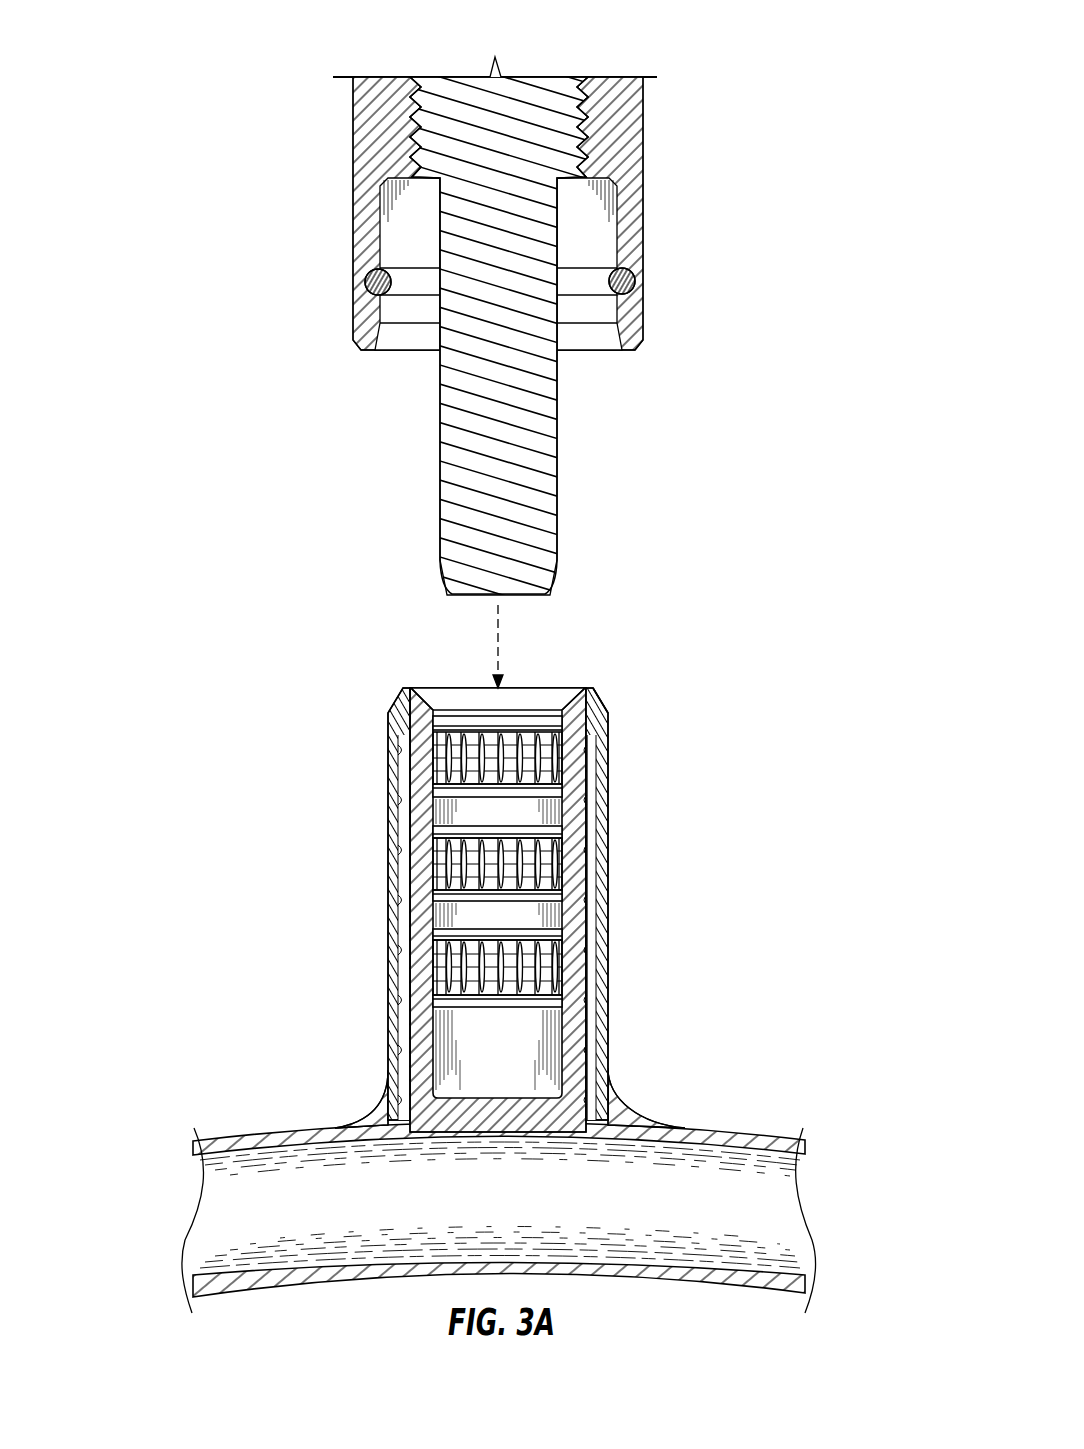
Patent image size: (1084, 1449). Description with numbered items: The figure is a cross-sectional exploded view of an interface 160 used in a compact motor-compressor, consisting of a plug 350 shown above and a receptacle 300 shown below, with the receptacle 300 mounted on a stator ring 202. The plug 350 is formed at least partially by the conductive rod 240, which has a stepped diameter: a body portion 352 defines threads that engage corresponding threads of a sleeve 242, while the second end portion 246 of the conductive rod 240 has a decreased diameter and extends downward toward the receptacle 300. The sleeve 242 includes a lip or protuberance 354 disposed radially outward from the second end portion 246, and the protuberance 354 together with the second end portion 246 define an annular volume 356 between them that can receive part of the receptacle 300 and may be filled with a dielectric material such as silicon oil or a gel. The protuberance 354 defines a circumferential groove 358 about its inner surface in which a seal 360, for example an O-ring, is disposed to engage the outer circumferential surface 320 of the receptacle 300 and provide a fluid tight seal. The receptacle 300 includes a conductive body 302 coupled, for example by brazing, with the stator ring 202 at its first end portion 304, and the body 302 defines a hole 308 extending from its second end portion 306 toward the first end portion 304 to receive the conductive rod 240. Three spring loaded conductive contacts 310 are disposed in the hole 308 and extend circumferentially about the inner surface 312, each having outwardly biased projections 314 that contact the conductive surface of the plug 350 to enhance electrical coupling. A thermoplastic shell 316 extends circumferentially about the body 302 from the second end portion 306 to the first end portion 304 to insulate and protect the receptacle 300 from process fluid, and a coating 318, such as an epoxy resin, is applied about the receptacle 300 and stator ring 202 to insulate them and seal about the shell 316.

The interface 160 is at (446, 325).
The conductive rod 240 is at (472, 325).
The sleeve 242 is at (645, 107).
The second end portion 246 is at (428, 426).
The receptacle 300 is at (499, 981).
The conductive body 302 is at (443, 951).
The first end portion 304 is at (516, 1145).
The second end portion 306 is at (580, 682).
The hole 308 is at (424, 700).
The conductive contacts 310 is at (432, 725).
The inner surface 312 is at (558, 1046).
The outwardly biased projections 314 is at (553, 760).
The shell 316 is at (608, 808).
The coating 318 is at (367, 1112).
The outer circumferential surface 320 is at (388, 812).
The plug 350 is at (446, 240).
The body portion 352 is at (398, 130).
The protuberance 354 is at (655, 249).
The annular volume 356 is at (392, 240).
The groove 358 is at (630, 292).
The seal 360 is at (583, 283).
The stator ring 202 is at (273, 1290).